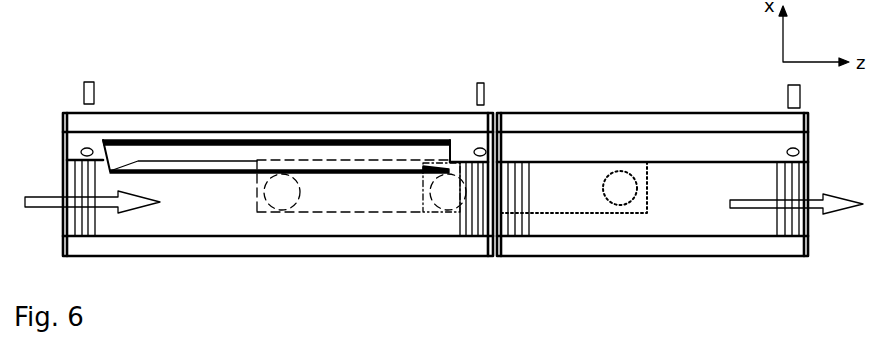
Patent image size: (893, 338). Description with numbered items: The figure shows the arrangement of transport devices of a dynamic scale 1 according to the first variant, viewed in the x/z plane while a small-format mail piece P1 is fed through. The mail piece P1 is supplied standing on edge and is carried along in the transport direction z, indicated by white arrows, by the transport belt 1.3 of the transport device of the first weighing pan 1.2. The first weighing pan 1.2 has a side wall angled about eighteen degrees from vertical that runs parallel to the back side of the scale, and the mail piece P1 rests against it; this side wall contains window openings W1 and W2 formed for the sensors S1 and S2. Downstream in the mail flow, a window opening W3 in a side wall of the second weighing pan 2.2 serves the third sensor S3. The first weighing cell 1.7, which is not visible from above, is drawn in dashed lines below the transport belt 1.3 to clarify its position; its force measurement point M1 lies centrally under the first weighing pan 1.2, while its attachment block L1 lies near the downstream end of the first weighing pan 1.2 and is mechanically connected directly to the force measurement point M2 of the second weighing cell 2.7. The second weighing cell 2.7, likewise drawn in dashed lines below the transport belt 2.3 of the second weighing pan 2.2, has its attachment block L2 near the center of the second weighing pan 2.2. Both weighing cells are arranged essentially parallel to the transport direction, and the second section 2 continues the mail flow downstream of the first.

The dynamic scale 1 is at (105, 58).
The first weighing pan 1.2 is at (242, 120).
The transport belt 1.3 is at (187, 228).
The first weighing cell 1.7 is at (350, 213).
The mail piece P1 is at (338, 151).
The force measurement point M1 is at (283, 192).
The force measurement point M2 is at (448, 185).
The attachment block L1 is at (448, 192).
The sensor S1 is at (83, 99).
The sensor S2 is at (477, 99).
The window opening W1 is at (87, 152).
The window opening W2 is at (484, 148).
The second pump section / housing 2 is at (662, 74).
The second weighing pan 2.2 is at (606, 122).
The transport belt 2.3 is at (673, 223).
The second weighing cell 2.7 is at (572, 214).
The attachment block L2 is at (619, 188).
The window opening W3 is at (787, 152).
The sensor S3 is at (787, 104).